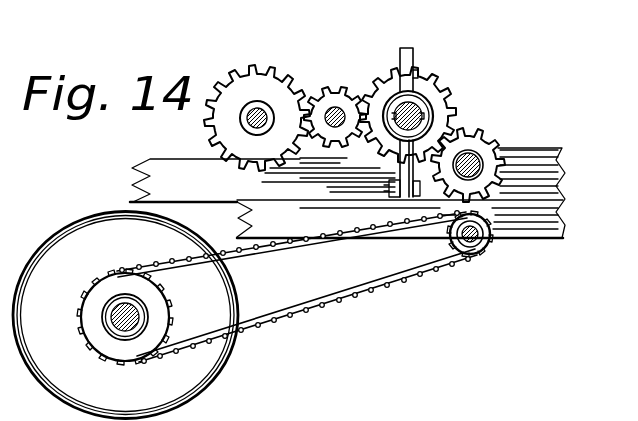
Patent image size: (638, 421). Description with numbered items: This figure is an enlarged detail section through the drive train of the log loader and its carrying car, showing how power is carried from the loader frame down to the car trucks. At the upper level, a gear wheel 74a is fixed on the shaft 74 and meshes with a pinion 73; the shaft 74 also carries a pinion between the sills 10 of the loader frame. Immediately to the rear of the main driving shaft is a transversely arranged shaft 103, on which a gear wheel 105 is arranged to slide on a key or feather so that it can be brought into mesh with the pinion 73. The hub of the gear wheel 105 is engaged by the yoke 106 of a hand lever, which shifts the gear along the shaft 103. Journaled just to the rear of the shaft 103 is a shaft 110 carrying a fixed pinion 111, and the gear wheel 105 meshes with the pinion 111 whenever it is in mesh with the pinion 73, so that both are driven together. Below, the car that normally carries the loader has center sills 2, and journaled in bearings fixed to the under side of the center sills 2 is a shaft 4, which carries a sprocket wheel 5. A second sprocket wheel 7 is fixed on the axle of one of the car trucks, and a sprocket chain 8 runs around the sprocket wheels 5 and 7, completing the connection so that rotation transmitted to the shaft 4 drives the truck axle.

The center sills 2 is at (542, 225).
The shaft 4 is at (470, 243).
The sprocket wheel 5 is at (478, 244).
The sprocket wheel 7 is at (162, 316).
The sprocket chain 8 is at (290, 312).
The sills 10 is at (137, 180).
The pinion 73 is at (337, 92).
The shaft 74 is at (250, 118).
The gear wheel 74a is at (233, 83).
The shaft 103 is at (412, 110).
The gear wheel 105 is at (437, 100).
The yoke 106 is at (432, 118).
The shaft 110 is at (480, 164).
The pinion 111 is at (490, 152).